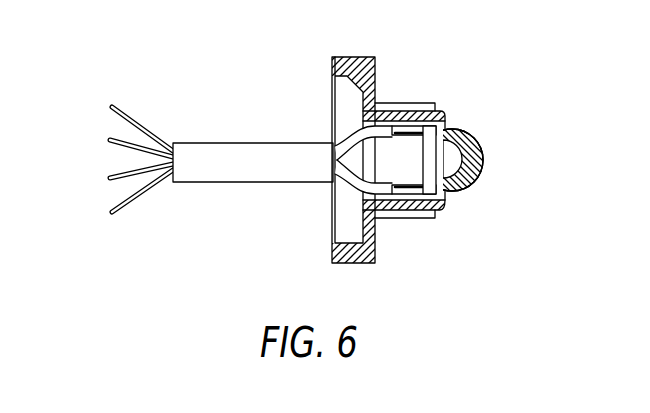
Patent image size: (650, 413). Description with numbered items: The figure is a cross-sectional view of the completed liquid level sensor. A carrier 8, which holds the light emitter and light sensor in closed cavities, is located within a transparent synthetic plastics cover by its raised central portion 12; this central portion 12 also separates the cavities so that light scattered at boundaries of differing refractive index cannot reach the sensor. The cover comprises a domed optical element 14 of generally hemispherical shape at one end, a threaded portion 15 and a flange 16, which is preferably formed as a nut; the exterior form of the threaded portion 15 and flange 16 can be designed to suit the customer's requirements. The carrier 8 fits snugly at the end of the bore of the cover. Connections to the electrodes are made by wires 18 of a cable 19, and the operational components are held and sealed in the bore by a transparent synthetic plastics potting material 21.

The carrier 8 is at (445, 190).
The raised central portion 12 is at (447, 152).
The domed optical element 14 is at (478, 167).
The threaded portion 15 is at (405, 102).
The flange 16 is at (349, 133).
The wires 18 is at (112, 107).
The cable 19 is at (195, 140).
The potting material 21 is at (340, 222).